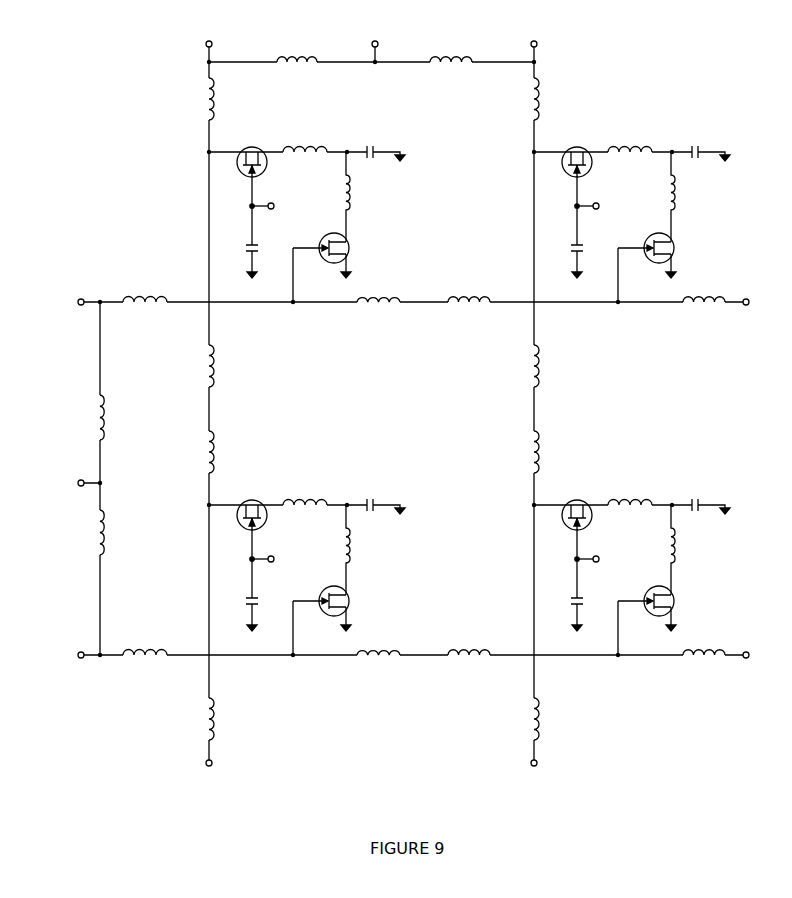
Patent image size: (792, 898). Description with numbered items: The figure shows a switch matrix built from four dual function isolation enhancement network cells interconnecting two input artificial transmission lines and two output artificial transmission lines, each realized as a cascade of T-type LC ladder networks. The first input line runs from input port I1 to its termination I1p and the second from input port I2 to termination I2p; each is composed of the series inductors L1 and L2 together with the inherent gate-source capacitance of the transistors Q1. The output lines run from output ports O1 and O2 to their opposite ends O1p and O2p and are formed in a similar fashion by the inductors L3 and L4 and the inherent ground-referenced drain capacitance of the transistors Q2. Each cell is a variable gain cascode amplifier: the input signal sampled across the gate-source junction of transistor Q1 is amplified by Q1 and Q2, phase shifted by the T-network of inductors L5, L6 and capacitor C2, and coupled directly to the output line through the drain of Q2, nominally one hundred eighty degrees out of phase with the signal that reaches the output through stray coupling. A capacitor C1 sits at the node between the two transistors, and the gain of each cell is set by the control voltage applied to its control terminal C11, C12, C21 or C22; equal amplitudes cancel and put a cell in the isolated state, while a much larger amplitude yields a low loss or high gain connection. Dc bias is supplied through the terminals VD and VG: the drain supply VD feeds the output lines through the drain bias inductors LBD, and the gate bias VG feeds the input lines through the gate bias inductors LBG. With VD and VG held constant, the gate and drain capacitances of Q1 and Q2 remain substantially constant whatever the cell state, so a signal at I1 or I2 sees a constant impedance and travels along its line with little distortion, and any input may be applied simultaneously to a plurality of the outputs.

The inductor L1 is at (306, 466).
The inductor L2 is at (541, 466).
The inductor L3 is at (391, 275).
The inductor L4 is at (390, 542).
The inductor L5 is at (523, 373).
The inductor L6 is at (467, 318).
The capacitor C1 is at (400, 418).
The capacitor C2 is at (538, 322).
The transistor Q1 is at (497, 440).
The transistor Q2 is at (414, 345).
The drain bias inductor LBD is at (374, 44).
The gate bias inductor LBG is at (122, 476).
The control terminal C11 is at (286, 210).
The control terminal C12 is at (611, 210).
The control terminal C21 is at (286, 563).
The control terminal C22 is at (611, 563).
The input port I1 is at (65, 307).
The input port I2 is at (65, 660).
The input line termination I1p is at (777, 289).
The input line termination I2p is at (777, 642).
The output port O1 is at (214, 785).
The output port O2 is at (538, 785).
The output line termination O1p is at (231, 13).
The output line termination O2p is at (556, 13).
The drain bias terminal VD is at (373, 28).
The gate bias terminal VG is at (66, 489).